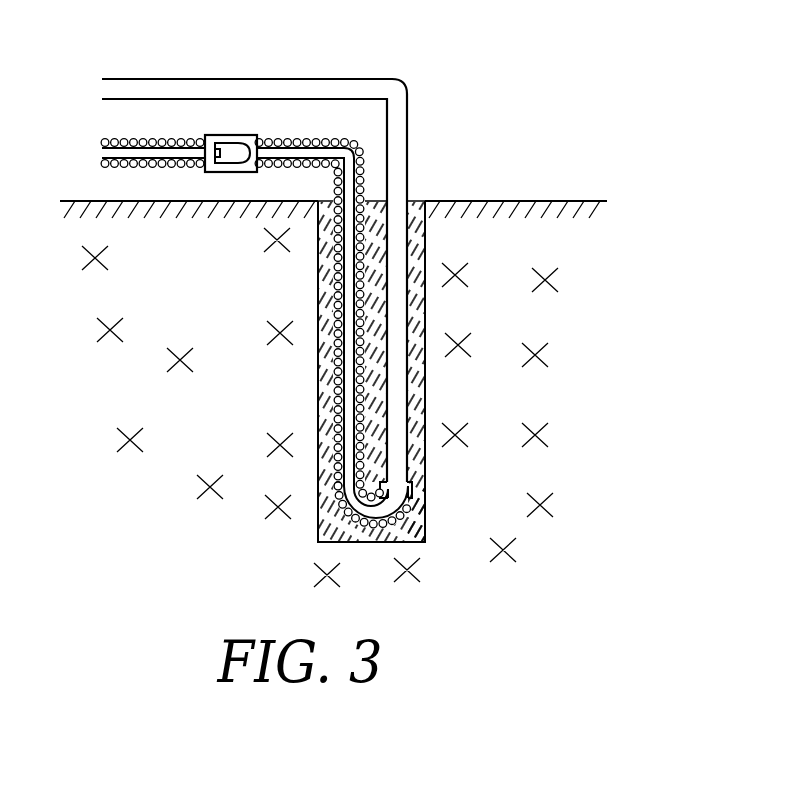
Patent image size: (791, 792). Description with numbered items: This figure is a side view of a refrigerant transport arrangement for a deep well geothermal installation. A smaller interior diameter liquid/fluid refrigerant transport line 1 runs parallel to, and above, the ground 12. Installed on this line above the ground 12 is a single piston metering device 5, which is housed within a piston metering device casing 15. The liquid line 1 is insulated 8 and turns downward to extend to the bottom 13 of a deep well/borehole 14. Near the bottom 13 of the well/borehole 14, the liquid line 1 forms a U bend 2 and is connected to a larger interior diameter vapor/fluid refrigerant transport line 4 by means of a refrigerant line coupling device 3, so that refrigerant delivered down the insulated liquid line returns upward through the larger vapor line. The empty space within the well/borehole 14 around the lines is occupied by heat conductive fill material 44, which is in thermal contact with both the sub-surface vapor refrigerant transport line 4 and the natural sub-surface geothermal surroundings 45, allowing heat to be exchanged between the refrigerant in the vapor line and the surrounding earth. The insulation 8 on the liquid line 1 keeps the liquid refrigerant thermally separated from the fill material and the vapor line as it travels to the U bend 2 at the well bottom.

The liquid/fluid refrigerant transport line 1 is at (348, 265).
The U bend 2 is at (410, 520).
The refrigerant line coupling device 3 is at (412, 492).
The vapor/fluid refrigerant transport line 4 is at (400, 388).
The piston metering device 5 is at (228, 172).
The insulation 8 is at (336, 371).
The ground 12 is at (550, 213).
The bottom of the deep well/borehole 13 is at (318, 540).
The deep well/borehole 14 is at (420, 315).
The piston metering device casing 15 is at (244, 135).
The heat conductive fill material 44 is at (420, 237).
The natural sub-surface geothermal surroundings 45 is at (530, 357).